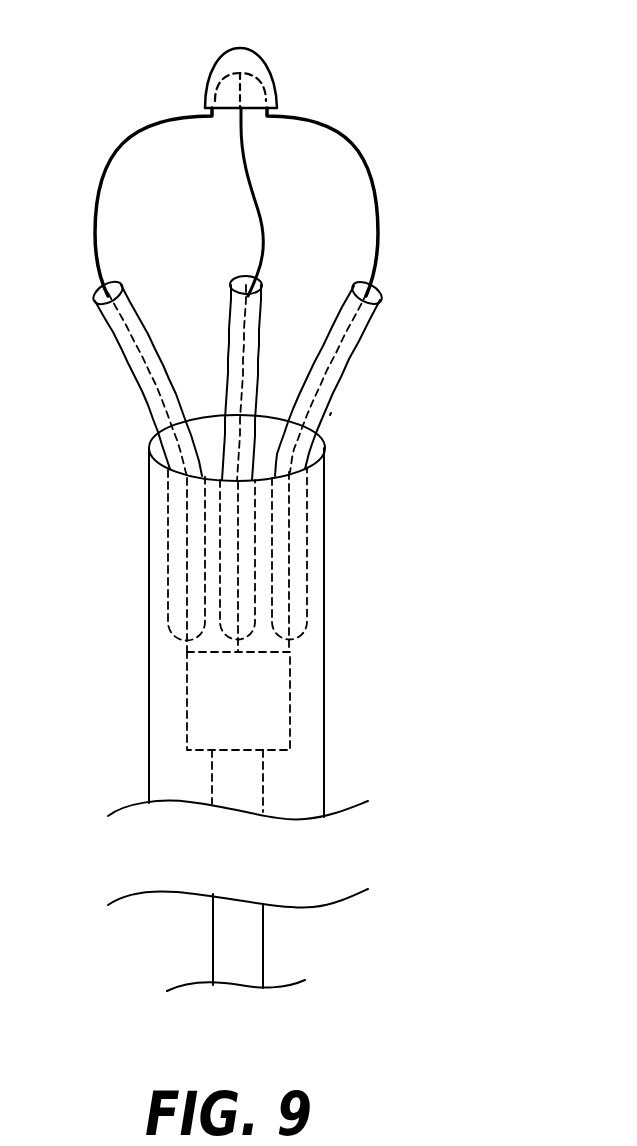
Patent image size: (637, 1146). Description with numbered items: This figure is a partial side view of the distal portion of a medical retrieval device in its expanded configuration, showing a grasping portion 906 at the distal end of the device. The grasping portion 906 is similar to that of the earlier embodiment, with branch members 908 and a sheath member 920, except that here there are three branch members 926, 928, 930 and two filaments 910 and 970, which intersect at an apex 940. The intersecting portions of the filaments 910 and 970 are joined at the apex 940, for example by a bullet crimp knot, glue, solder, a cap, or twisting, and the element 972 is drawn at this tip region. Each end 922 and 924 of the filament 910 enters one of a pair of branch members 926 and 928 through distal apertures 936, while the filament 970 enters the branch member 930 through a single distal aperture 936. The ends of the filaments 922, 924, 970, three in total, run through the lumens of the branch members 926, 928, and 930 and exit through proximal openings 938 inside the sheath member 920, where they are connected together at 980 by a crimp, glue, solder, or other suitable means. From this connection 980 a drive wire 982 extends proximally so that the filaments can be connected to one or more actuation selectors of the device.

The grasping portion 906 is at (291, 530).
The branch members 908 is at (330, 415).
The filament 910 is at (251, 200).
The sheath member 920 is at (324, 660).
The end of filament 922 is at (120, 172).
The end of filament 924 is at (373, 218).
The branch member 926 is at (133, 367).
The branch member 928 is at (367, 358).
The branch member 930 is at (227, 310).
The distal apertures 936 is at (375, 292).
The proximal openings 938 is at (313, 632).
The apex 940 is at (230, 75).
The filament 970 is at (240, 172).
The tip electrode 972 is at (271, 72).
The connection 980 is at (288, 707).
The drive wire 982 is at (263, 936).